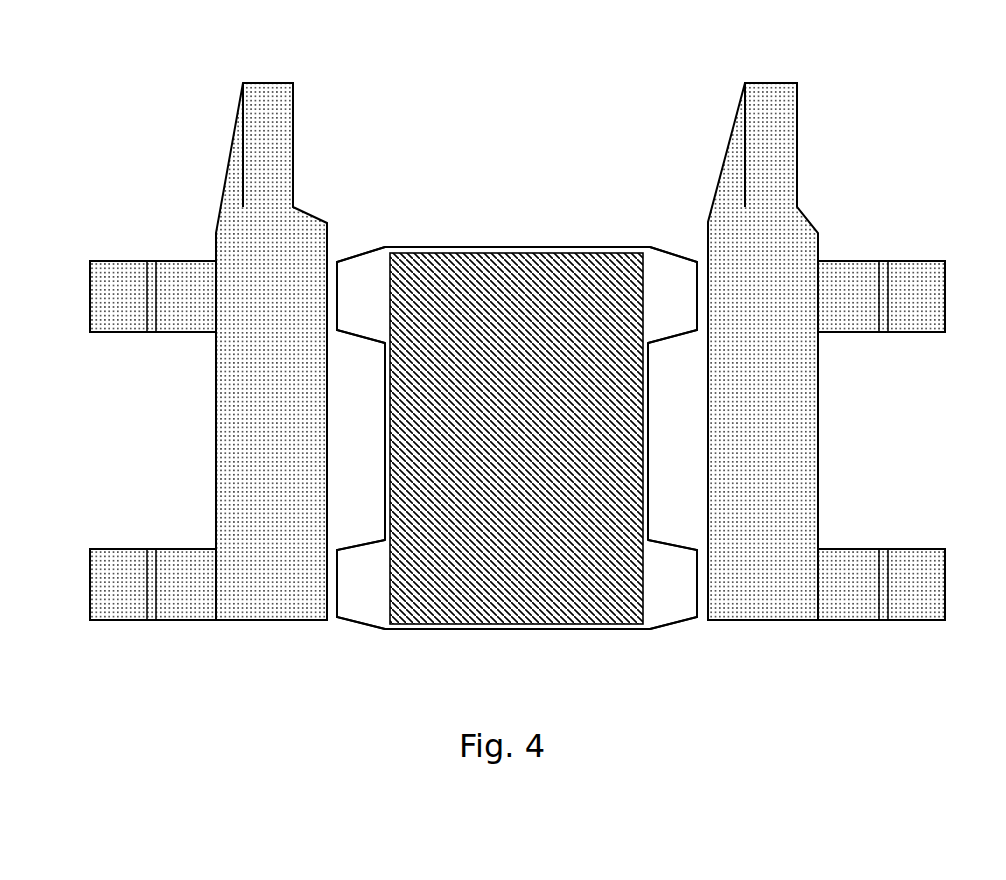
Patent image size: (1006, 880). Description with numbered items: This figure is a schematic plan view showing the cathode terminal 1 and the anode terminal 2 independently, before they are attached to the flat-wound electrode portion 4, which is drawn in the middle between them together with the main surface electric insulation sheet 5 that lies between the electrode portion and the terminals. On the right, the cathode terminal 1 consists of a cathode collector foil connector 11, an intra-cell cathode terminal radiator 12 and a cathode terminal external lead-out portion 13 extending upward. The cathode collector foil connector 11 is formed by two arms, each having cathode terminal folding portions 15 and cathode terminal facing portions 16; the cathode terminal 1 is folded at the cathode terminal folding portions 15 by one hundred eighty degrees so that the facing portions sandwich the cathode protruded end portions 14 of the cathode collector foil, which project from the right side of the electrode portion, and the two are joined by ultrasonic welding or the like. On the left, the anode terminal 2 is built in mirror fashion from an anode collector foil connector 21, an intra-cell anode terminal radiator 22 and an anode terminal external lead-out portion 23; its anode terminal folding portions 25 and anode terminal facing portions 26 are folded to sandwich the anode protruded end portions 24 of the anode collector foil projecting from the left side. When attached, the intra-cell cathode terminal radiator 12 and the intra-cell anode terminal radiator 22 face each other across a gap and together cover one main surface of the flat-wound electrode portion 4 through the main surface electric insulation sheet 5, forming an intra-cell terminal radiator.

The cathode terminal 1 is at (799, 206).
The anode terminal 2 is at (229, 214).
The flat-wound electrode portion 4 is at (483, 248).
The main surface electric insulation sheet 5 is at (508, 604).
The cathode collector foil connector 11 is at (857, 268).
The intra-cell cathode terminal radiator 12 is at (805, 425).
The cathode terminal external lead-out portion 13 is at (782, 167).
The cathode protruded end portions 14 is at (668, 292).
The cathode terminal folding portions 15 is at (880, 320).
The cathode terminal facing portions 16 is at (920, 312).
The anode collector foil connector 21 is at (172, 267).
The intra-cell anode terminal radiator 22 is at (258, 428).
The anode terminal external lead-out portion 23 is at (255, 137).
The anode protruded end portions 24 is at (367, 293).
The anode terminal folding portions 25 is at (152, 332).
The anode terminal facing portions 26 is at (113, 312).